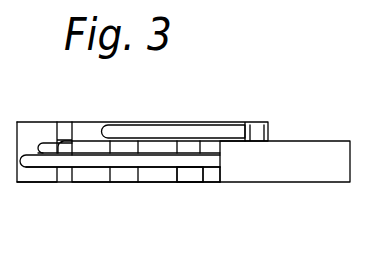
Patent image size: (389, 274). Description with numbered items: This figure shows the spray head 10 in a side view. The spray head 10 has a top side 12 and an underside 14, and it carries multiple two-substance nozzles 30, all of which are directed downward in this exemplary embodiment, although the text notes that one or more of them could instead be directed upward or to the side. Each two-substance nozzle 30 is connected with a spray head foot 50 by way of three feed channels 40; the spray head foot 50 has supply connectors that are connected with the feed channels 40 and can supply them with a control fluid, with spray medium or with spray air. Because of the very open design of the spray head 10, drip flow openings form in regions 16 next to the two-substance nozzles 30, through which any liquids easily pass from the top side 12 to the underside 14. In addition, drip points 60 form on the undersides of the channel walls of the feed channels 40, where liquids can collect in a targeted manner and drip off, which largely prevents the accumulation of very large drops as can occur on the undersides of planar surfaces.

The spray head 10 is at (278, 92).
The top side 12 is at (130, 107).
The underside 14 is at (147, 177).
The regions next to the two-substance nozzles 16 is at (208, 184).
The two-substance nozzle 30 is at (85, 175).
The feed channel 40 is at (188, 128).
The spray head foot 50 is at (313, 173).
The drip point 60 is at (185, 168).